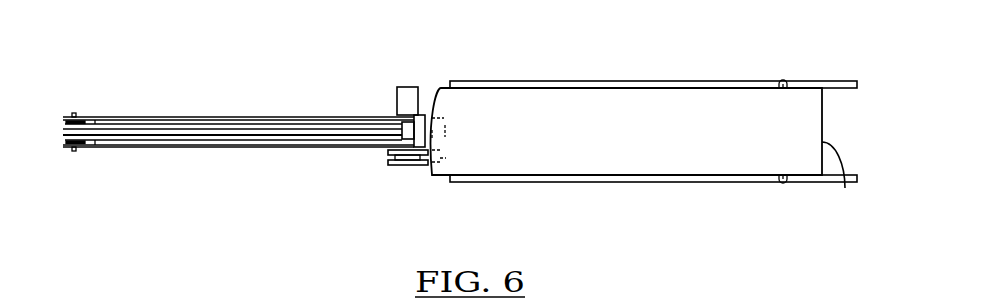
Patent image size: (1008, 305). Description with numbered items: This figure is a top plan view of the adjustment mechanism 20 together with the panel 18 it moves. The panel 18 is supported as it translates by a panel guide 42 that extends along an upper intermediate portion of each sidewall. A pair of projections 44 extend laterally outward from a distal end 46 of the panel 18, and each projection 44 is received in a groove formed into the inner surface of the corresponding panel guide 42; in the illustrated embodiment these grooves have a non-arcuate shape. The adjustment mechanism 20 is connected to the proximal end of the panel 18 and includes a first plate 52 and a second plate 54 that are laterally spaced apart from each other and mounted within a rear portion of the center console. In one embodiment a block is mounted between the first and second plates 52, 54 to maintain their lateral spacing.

The panel 18 is at (630, 143).
The adjustment mechanism 20 is at (254, 133).
The panel guide 42 is at (592, 80).
The projection 44 is at (783, 80).
The distal end 46 is at (845, 188).
The first plate 52 is at (228, 115).
The second plate 54 is at (240, 147).